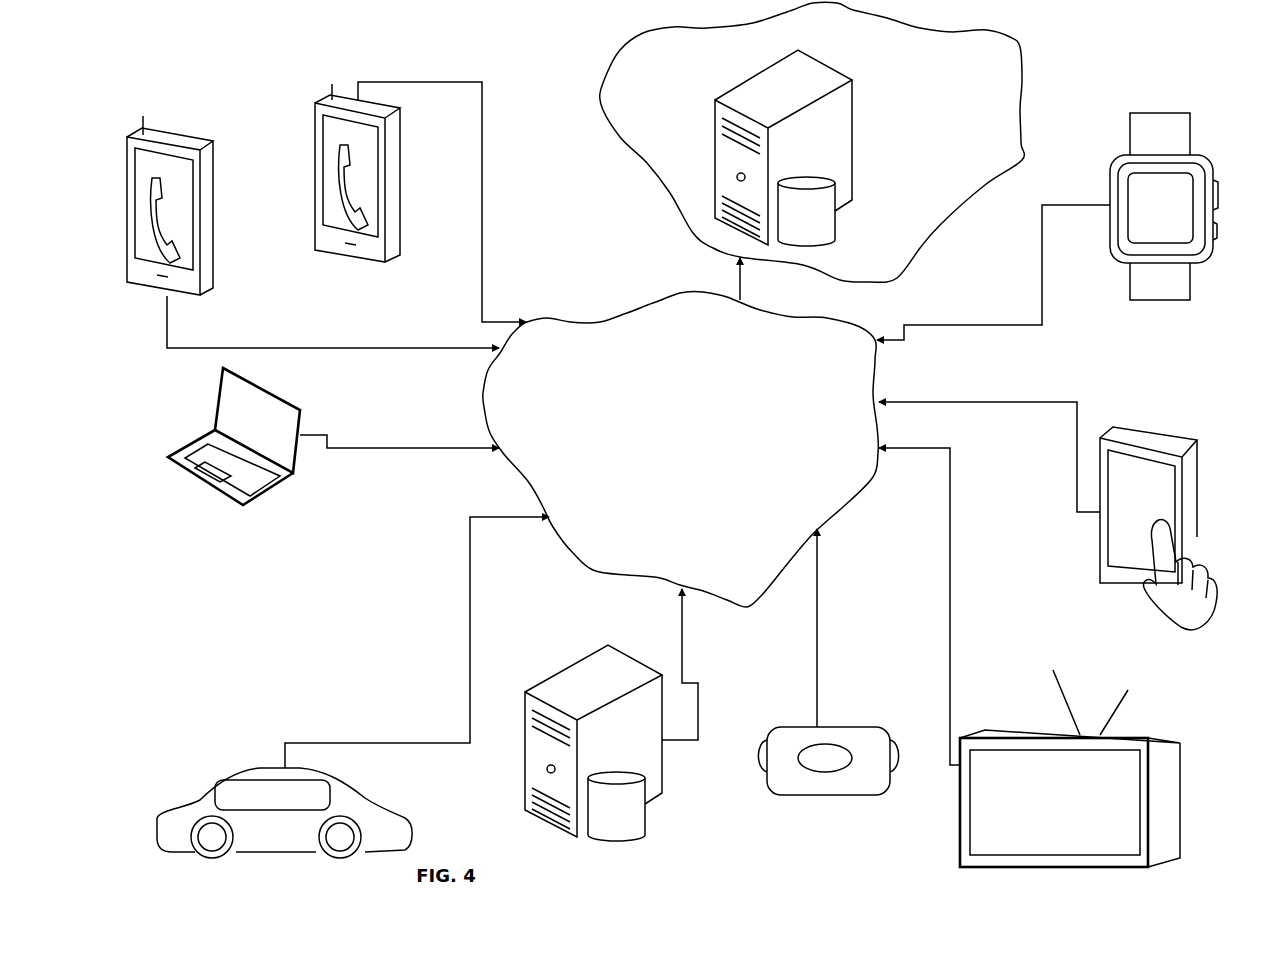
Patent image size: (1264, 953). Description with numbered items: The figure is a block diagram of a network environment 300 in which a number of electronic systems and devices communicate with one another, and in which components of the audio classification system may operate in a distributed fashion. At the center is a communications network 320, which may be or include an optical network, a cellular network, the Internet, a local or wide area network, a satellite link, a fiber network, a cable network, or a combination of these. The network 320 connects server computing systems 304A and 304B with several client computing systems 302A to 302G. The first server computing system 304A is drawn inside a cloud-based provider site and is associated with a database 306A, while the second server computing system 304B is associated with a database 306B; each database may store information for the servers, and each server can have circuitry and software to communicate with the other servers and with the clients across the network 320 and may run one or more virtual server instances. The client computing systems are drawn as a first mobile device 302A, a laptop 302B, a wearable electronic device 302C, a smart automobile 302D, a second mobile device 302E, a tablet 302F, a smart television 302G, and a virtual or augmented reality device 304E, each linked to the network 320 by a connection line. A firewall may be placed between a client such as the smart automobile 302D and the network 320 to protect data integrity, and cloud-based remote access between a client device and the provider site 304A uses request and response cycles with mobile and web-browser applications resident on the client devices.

The system 300 is at (537, 93).
The client computing system 302A is at (404, 177).
The client computing system 302B is at (323, 436).
The wearable electronic device 302C is at (1047, 200).
The client computing system 302D is at (337, 687).
The client computing system 302E is at (309, 208).
The client computing system 302F is at (1048, 493).
The client computing system 302G is at (1046, 657).
The server computing system 304A is at (812, 142).
The server computing system 304B is at (593, 713).
The virtual/augmented reality device 304E is at (802, 703).
The database 306A is at (824, 211).
The database 306B is at (595, 820).
The communications network 320 is at (681, 449).